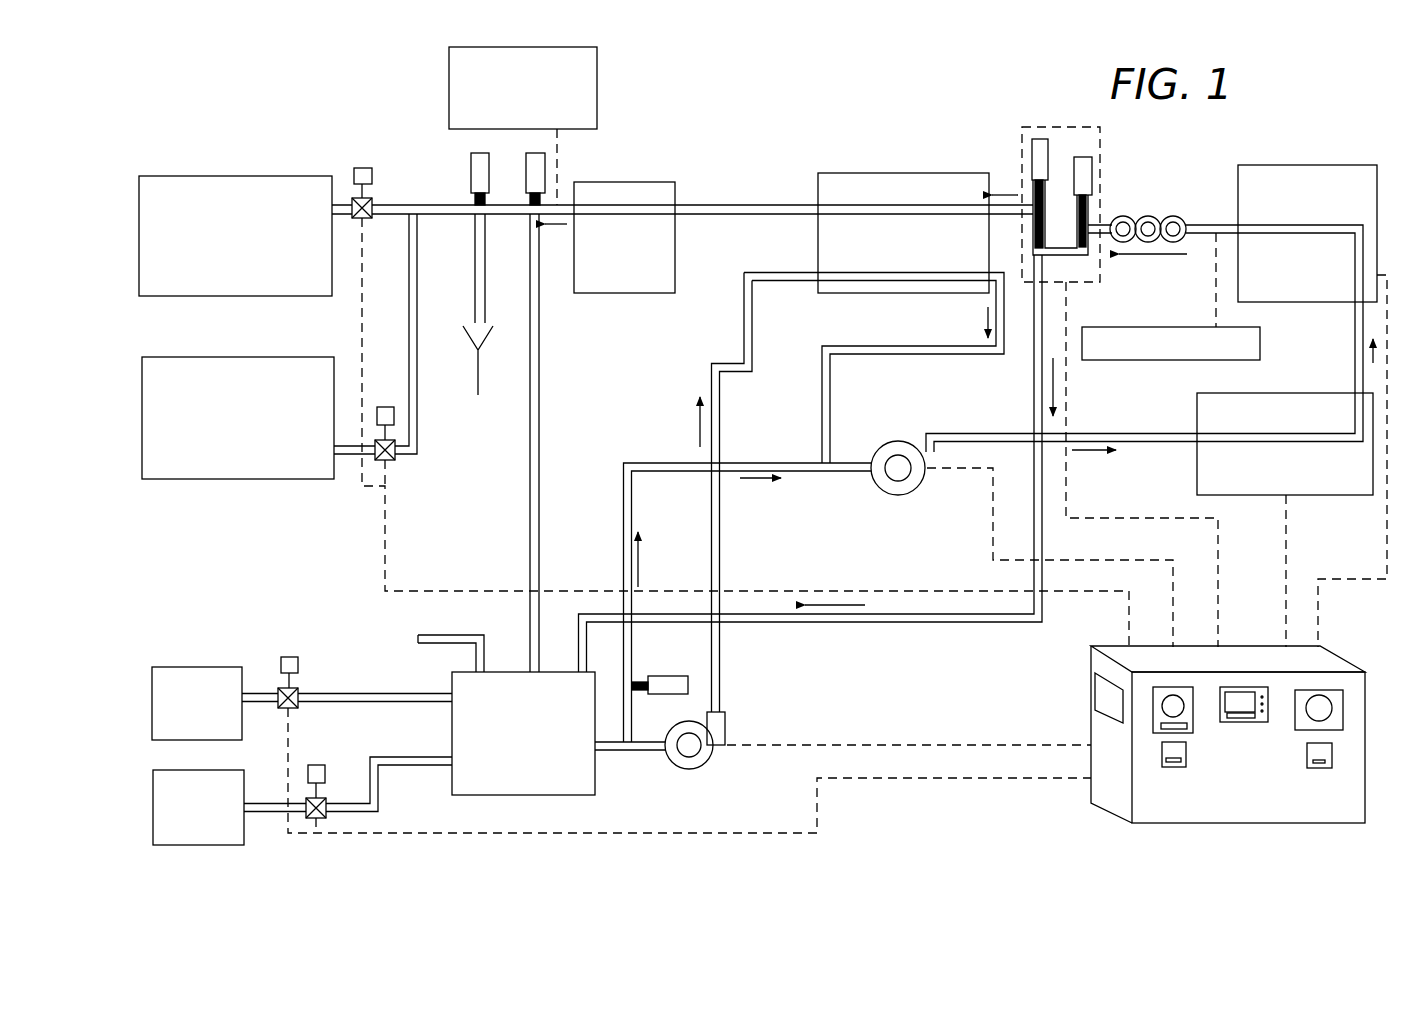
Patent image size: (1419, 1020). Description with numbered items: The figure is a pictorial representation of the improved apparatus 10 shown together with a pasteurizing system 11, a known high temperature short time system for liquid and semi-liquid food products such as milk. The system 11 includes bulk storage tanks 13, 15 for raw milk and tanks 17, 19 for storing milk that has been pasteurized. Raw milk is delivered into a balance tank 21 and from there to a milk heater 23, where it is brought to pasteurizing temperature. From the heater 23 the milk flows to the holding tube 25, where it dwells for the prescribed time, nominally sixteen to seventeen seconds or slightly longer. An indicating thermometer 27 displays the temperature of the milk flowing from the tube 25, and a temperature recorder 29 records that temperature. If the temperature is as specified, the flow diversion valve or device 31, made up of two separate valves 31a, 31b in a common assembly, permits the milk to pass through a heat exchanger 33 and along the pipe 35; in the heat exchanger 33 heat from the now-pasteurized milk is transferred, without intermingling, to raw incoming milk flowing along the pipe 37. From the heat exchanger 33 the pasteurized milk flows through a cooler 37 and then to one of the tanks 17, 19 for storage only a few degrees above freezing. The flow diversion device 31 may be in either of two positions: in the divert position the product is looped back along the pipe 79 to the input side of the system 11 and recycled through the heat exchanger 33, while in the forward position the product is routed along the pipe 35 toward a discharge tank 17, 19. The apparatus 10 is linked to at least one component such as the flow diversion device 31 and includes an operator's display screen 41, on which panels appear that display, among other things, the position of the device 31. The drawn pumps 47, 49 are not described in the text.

The improved apparatus 10 is at (1242, 708).
The pasteurizing system 11 is at (800, 155).
The bulk storage tank 13 is at (198, 667).
The bulk storage tank 15 is at (210, 769).
The tank 17 is at (250, 176).
The tank 19 is at (252, 356).
The balance tank 21 is at (596, 777).
The milk heater 23 is at (1378, 218).
The holding tube 25 is at (1143, 217).
The indicating thermometer 27 is at (1260, 337).
The temperature recorder 29 is at (597, 89).
The flow diversion valve 31 is at (1086, 196).
The valve 31a is at (1033, 157).
The valve 31b is at (1093, 167).
The heat exchanger 33 is at (912, 173).
The pipe 35 is at (720, 215).
The cooler 37 is at (610, 182).
The operator's display screen 41 is at (1242, 722).
The timing pump 47 is at (880, 445).
The pump 49 is at (700, 764).
The pipe 79 is at (1043, 533).